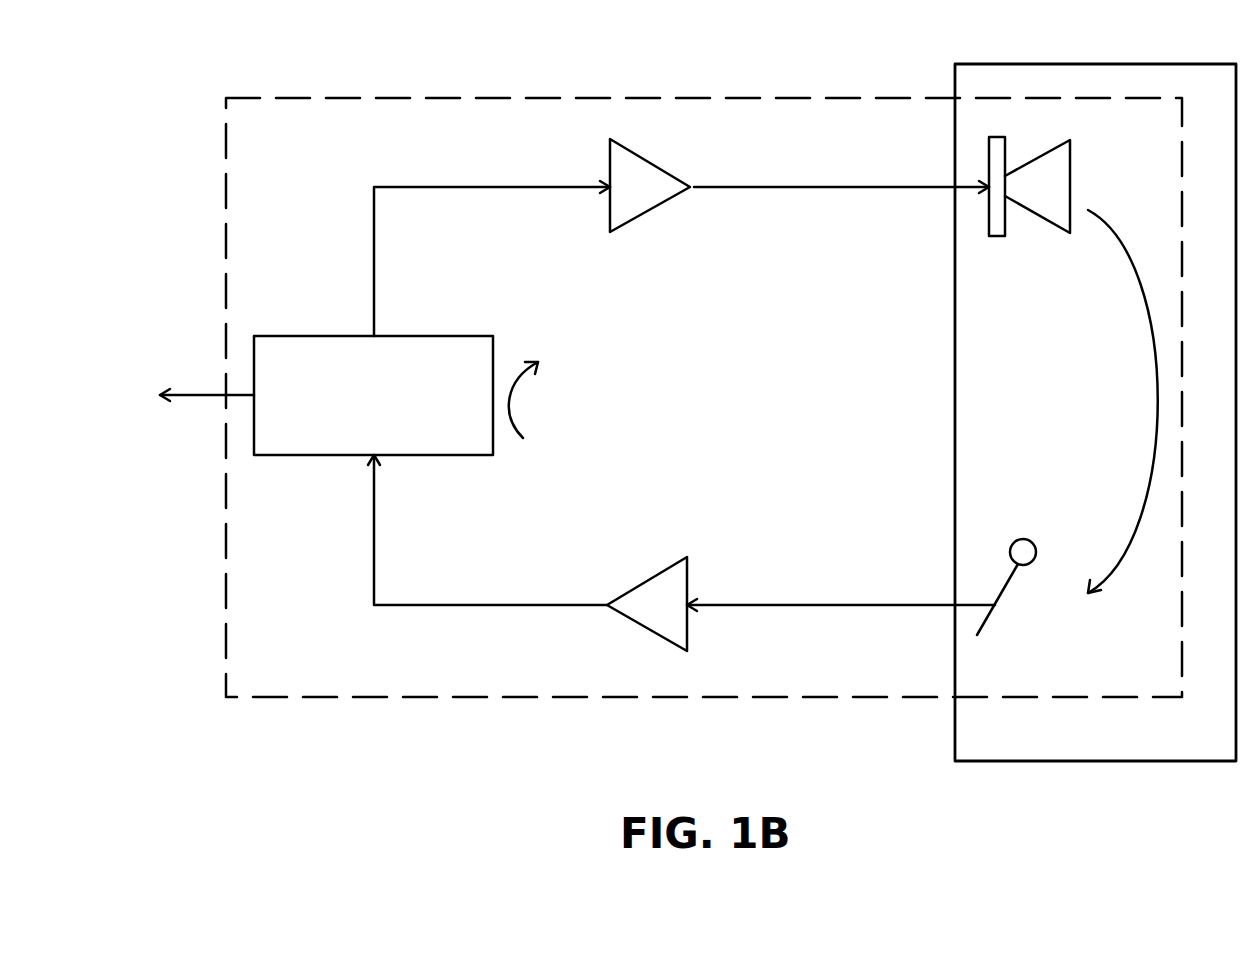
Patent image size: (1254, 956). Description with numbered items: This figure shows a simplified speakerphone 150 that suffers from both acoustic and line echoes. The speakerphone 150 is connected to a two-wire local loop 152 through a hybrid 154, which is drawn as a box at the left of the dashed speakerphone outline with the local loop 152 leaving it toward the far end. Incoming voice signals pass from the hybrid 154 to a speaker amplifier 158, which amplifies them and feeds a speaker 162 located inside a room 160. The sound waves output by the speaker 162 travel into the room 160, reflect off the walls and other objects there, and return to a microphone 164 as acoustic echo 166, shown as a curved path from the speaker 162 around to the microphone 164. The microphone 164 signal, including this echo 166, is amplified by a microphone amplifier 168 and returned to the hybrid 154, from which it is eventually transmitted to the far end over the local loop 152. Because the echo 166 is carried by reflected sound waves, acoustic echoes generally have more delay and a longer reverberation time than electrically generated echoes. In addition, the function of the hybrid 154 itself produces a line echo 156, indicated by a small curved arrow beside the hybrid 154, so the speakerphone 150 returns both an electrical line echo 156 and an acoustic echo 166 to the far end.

The speakerphone 150 is at (370, 98).
The 2-wire local loop 152 is at (208, 398).
The hybrid 154 is at (300, 457).
The line echo 156 is at (517, 440).
The speaker amplifier 158 is at (602, 212).
The room 160 is at (1076, 63).
The speaker 162 is at (1044, 222).
The microphone 164 is at (1008, 592).
The echo 166 is at (1143, 283).
The microphone amplifier 168 is at (661, 637).